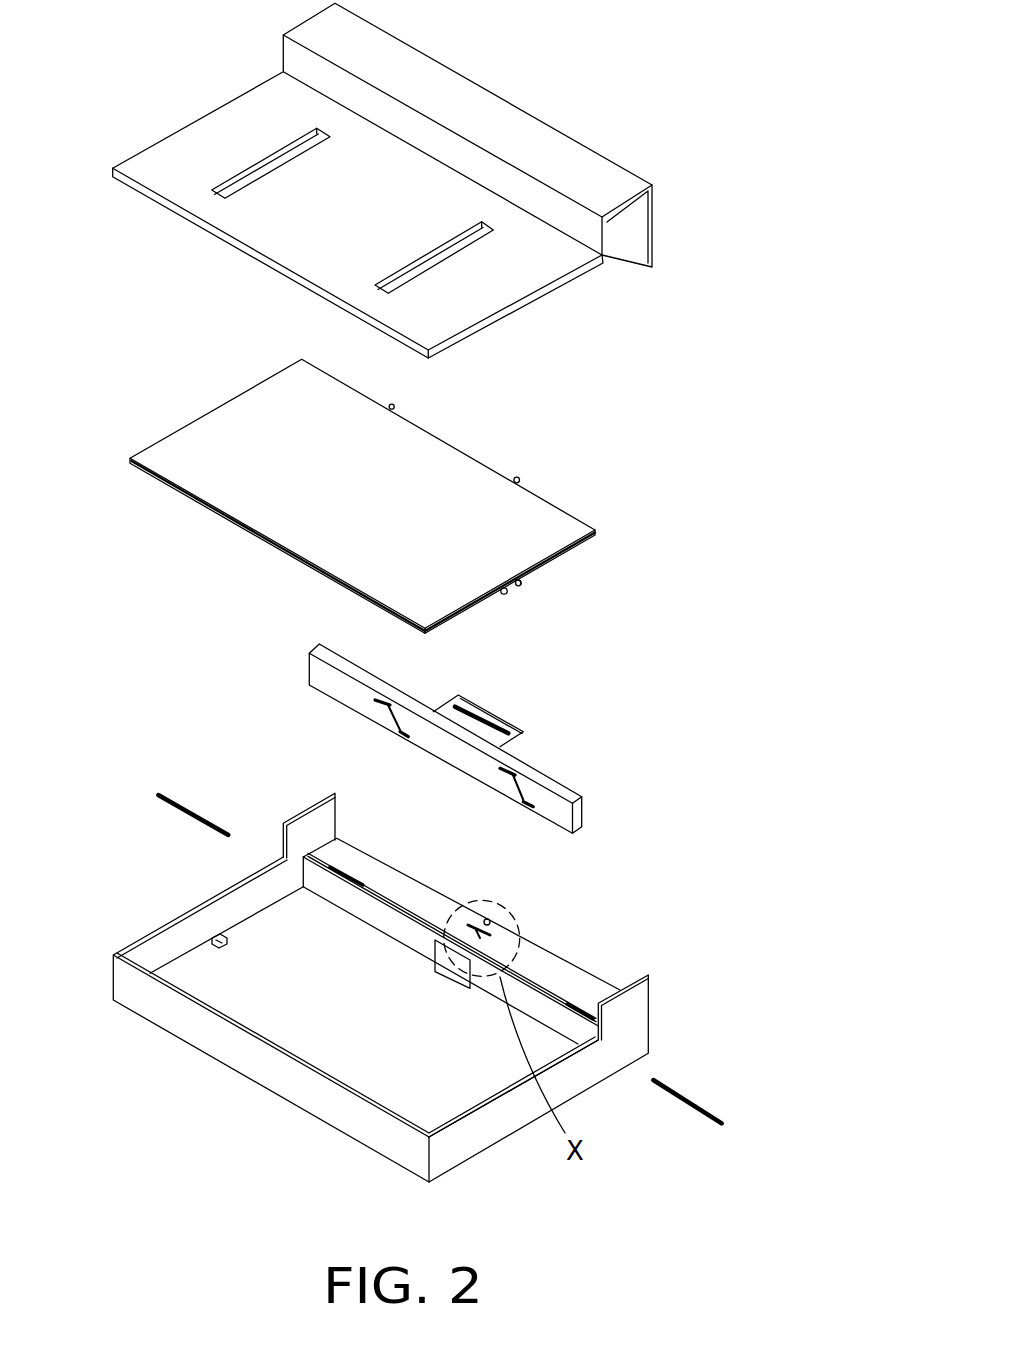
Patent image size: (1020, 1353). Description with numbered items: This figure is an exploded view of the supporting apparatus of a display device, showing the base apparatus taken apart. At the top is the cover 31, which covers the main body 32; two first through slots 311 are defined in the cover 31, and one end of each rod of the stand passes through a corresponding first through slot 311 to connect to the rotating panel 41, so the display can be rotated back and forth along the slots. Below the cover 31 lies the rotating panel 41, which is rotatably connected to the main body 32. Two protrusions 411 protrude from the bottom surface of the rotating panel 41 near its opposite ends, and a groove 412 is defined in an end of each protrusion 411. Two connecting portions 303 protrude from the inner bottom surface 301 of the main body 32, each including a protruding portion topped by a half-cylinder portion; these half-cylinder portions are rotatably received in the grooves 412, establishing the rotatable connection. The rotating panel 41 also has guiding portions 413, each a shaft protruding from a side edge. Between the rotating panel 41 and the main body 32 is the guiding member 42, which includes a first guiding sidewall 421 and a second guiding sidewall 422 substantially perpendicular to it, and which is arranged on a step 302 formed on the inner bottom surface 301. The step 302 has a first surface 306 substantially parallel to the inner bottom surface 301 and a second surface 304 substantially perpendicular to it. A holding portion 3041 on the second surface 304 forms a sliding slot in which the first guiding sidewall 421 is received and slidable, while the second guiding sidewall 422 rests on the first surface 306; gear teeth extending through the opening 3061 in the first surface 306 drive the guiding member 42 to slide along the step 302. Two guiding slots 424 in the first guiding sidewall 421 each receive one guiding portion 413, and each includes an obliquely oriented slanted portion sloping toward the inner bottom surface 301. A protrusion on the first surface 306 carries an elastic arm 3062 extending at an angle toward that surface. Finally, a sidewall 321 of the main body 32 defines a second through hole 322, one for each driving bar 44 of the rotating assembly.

The cover 31 is at (393, 180).
The first through slot 311 is at (247, 183).
The rotating panel 41 is at (383, 501).
The protrusion 411 is at (521, 588).
The groove 412 is at (510, 595).
The guiding portion 413 is at (517, 480).
The guiding member 42 is at (433, 738).
The first guiding sidewall 421 is at (315, 667).
The second guiding sidewall 422 is at (376, 682).
The guiding slot 424 is at (390, 713).
The driving bar 44 is at (177, 813).
The main body 32 is at (395, 1010).
The sidewall 321 is at (452, 1153).
The second through hole 322 is at (623, 1062).
The inner bottom surface 301 is at (315, 1043).
The step 302 is at (495, 925).
The connecting portion 303 is at (217, 937).
The second surface 304 is at (282, 860).
The holding portion 3041 is at (520, 940).
The first surface 306 is at (493, 927).
The opening 3061 is at (358, 880).
The elastic arm 3062 is at (475, 923).